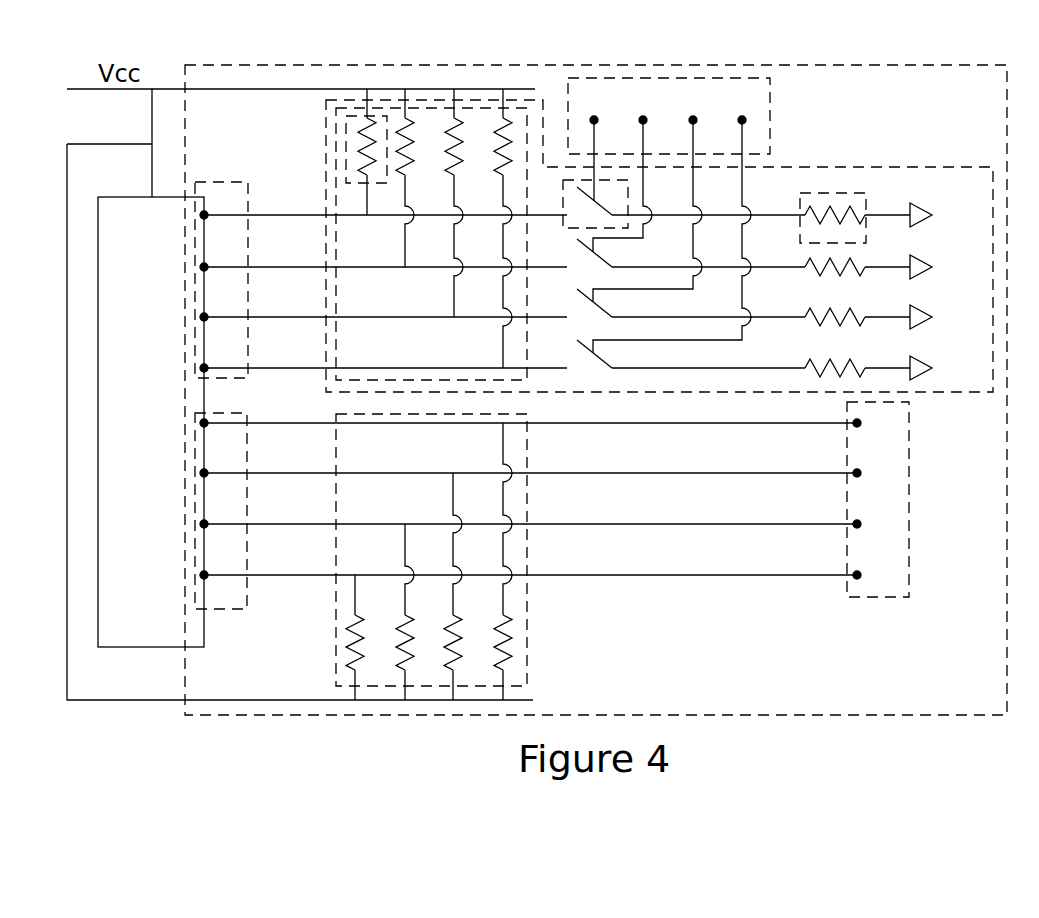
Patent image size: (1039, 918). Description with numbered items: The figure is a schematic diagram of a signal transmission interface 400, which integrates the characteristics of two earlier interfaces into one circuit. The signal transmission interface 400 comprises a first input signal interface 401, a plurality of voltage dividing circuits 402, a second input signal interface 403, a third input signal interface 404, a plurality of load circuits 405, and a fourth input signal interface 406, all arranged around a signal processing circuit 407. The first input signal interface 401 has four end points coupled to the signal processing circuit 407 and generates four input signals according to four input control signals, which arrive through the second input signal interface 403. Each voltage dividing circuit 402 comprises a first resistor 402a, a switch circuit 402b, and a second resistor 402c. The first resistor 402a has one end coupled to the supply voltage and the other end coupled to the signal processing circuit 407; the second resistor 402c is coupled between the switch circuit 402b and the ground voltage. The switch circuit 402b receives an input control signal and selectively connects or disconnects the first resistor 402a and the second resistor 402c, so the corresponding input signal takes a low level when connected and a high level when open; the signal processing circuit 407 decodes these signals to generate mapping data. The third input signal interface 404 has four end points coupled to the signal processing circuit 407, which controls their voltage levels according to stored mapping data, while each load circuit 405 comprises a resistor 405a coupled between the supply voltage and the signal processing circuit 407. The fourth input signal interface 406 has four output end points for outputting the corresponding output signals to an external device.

The signal transmission interface 400 is at (945, 64).
The first input signal interface 401 is at (222, 180).
The voltage dividing circuit 402 is at (655, 206).
The first resistor 402a is at (353, 115).
The switch circuit 402b is at (565, 226).
The second resistor 402c is at (832, 192).
The second input signal interface 403 is at (680, 78).
The third input signal interface 404 is at (222, 612).
The load circuit 405 is at (474, 557).
The resistor 405a is at (505, 668).
The fourth input signal interface 406 is at (878, 600).
The signal processing circuit 407 is at (112, 648).